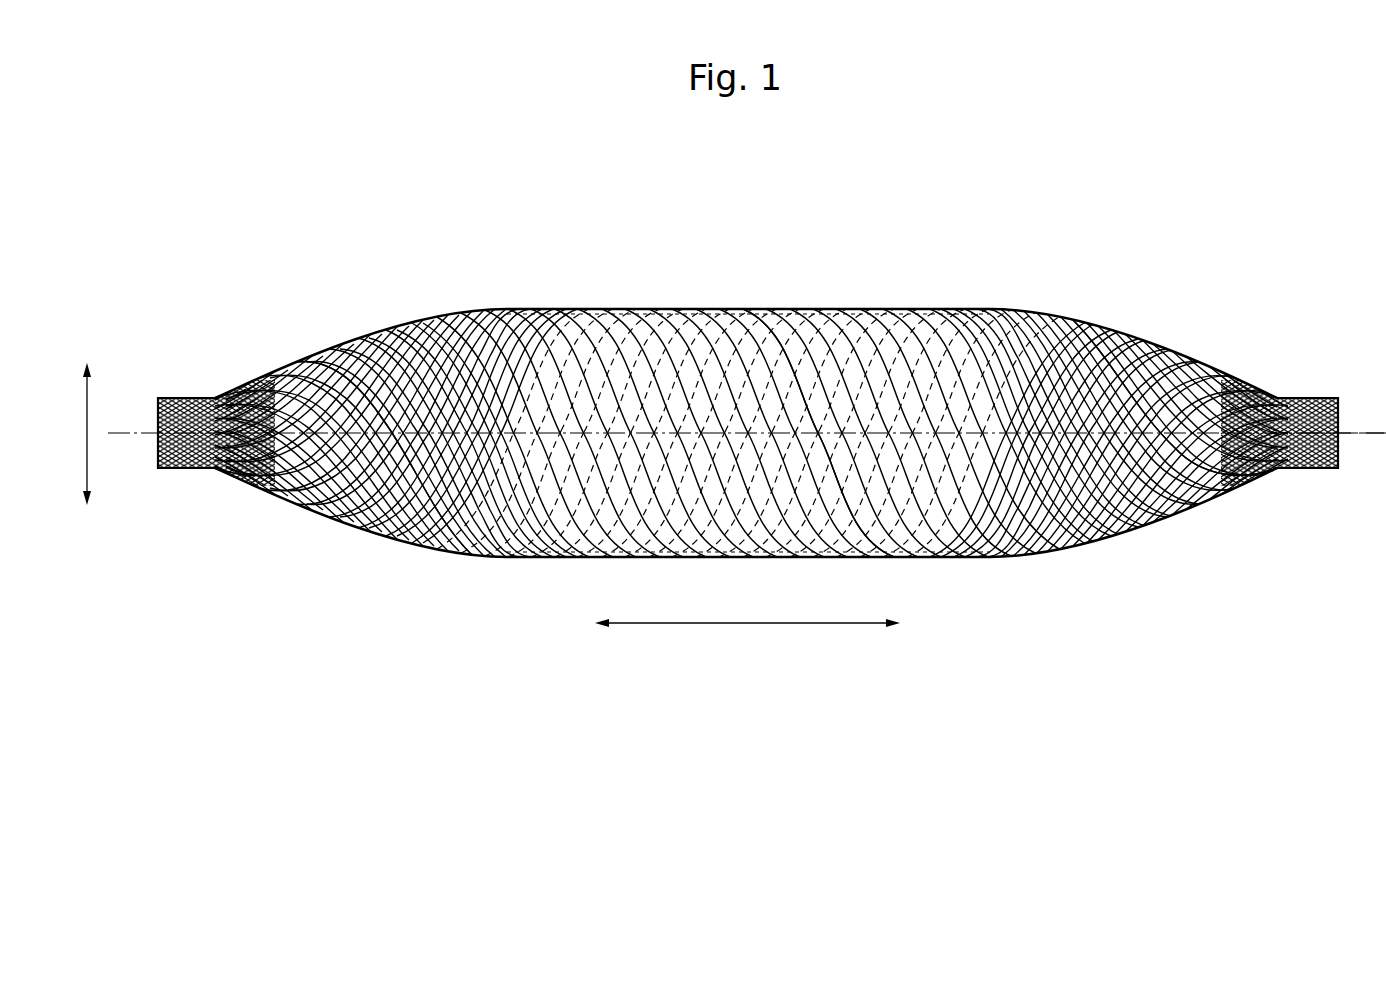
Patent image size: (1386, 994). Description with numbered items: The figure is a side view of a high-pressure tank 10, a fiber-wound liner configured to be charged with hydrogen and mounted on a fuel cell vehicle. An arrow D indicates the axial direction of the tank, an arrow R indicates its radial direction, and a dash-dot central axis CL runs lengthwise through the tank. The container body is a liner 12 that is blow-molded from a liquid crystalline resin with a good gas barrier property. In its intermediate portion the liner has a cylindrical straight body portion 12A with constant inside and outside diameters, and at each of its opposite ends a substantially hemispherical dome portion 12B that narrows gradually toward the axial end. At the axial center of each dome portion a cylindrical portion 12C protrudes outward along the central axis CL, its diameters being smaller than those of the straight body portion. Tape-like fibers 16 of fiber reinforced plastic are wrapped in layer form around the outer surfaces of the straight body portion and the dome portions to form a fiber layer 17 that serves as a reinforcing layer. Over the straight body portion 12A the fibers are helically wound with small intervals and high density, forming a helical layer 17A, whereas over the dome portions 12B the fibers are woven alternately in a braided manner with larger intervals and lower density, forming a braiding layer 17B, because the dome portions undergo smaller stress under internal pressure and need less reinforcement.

The high-pressure tank 10 is at (484, 276).
The liner 12 is at (605, 308).
The straight body portion 12A is at (850, 308).
The dome portion 12B is at (340, 338).
The cylindrical portion 12C is at (173, 398).
The fiber 16 is at (777, 352).
The fiber layer 17 is at (777, 352).
The helical layer 17A is at (650, 377).
The braiding layer 17B is at (388, 410).
The radial direction R is at (88, 472).
The axial direction D is at (757, 625).
The central axis CL is at (1365, 432).